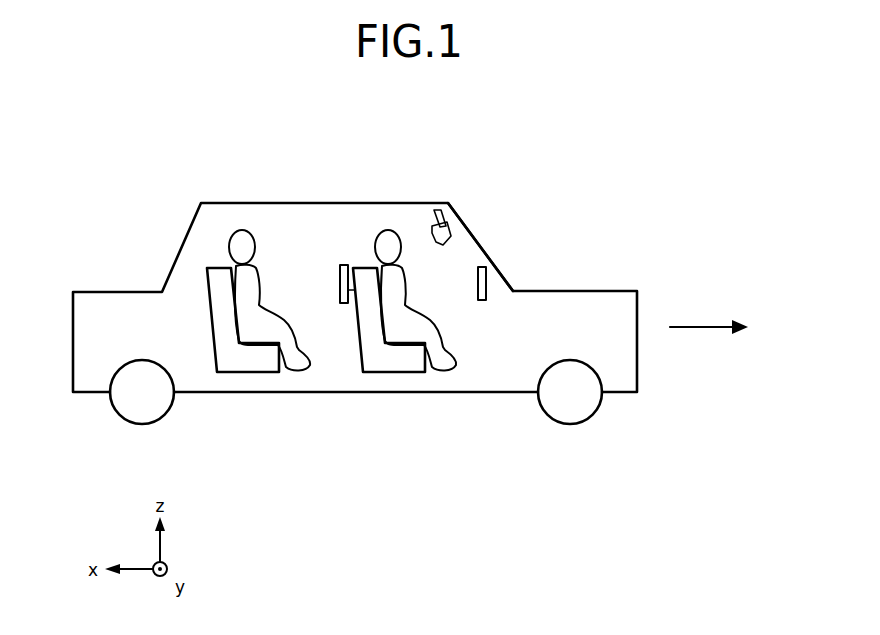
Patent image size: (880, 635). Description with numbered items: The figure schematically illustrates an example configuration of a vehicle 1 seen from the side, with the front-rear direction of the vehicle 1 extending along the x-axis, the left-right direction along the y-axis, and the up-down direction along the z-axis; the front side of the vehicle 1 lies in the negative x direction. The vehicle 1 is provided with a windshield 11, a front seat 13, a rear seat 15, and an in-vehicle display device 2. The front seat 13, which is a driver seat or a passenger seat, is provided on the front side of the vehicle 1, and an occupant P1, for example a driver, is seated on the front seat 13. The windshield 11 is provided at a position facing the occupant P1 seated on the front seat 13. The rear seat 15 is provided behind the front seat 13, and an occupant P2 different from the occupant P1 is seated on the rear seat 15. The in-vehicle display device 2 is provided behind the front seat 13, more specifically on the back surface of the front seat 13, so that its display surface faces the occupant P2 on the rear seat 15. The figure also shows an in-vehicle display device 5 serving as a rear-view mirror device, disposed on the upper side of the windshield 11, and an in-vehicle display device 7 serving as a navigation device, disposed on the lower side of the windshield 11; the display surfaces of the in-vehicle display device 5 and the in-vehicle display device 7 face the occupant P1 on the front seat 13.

The vehicle 1 is at (648, 172).
The in-vehicle display device 2 is at (343, 264).
The in-vehicle display device 5 is at (446, 213).
The in-vehicle display device 7 is at (487, 302).
The windshield 11 is at (500, 265).
The front seat 13 is at (385, 360).
The rear seat 15 is at (237, 360).
The occupant P1 is at (387, 230).
The occupant P2 is at (241, 230).